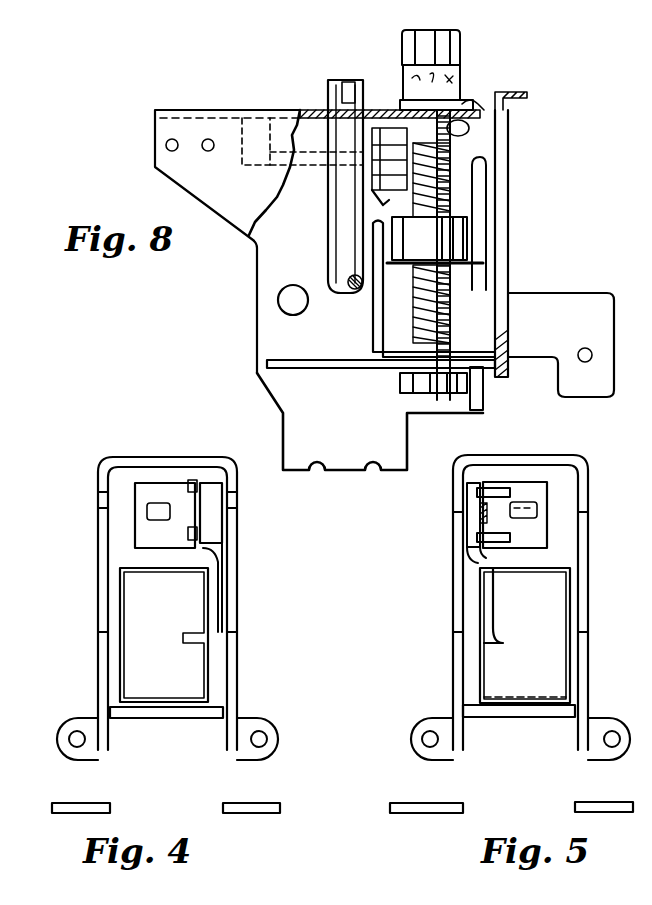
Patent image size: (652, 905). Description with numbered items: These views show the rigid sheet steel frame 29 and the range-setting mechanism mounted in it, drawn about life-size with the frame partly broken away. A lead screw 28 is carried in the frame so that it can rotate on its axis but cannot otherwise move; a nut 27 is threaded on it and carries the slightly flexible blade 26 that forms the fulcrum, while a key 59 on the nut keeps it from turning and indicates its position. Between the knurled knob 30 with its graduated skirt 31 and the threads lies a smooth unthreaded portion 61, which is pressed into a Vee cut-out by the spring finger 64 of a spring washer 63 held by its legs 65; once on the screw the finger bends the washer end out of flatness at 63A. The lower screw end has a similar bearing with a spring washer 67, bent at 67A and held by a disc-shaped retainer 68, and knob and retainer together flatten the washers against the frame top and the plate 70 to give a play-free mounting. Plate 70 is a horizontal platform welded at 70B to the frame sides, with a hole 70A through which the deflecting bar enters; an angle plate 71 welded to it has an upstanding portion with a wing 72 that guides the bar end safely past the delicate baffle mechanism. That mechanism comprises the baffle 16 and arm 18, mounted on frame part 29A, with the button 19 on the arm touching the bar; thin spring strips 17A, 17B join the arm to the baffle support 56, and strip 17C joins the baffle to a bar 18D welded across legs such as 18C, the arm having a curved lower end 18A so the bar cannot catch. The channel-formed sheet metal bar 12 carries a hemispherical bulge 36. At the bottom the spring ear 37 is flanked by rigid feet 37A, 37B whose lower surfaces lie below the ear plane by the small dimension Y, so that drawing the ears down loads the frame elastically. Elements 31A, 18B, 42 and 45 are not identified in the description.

In FIG. 8, the knurled knob 30 is at (410, 30).
In FIG. 8, the graduated skirt 31 is at (400, 78).
In FIG. 8, the washer 31A is at (448, 100).
In FIG. 8, the slot in terminal 18B is at (365, 82).
In FIG. 4, the slot in terminal 18B is at (190, 481).
In FIG. 8, the unthreaded cylindrical portion 61 is at (408, 101).
In FIG. 8, the spring washer 63 is at (470, 105).
In FIG. 8, the bent end of washer 63A is at (500, 95).
In FIG. 8, the legs 65 is at (505, 113).
In FIG. 8, the spring finger 64 is at (470, 130).
In FIG. 8, the mounting plate / ear 42 is at (330, 104).
In FIG. 4, the mounting plate / ear 42 is at (262, 719).
In FIG. 5, the mounting plate / ear 42 is at (440, 720).
In FIG. 8, the baffle 16 is at (245, 167).
In FIG. 5, the baffle 16 is at (478, 531).
In FIG. 8, the button 19 is at (345, 182).
In FIG. 5, the button 19 is at (540, 511).
In FIG. 8, the curved lower end 18A is at (385, 208).
In FIG. 8, the bar 18D is at (445, 155).
In FIG. 4, the bar 18D is at (212, 483).
In FIG. 8, the spring strip 17C is at (445, 182).
In FIG. 8, the bar 12 is at (510, 200).
In FIG. 8, the nut 27 is at (411, 245).
In FIG. 8, the flexible blade 26 is at (485, 265).
In FIG. 8, the key 59 is at (450, 302).
In FIG. 8, the lead screw 28 is at (450, 320).
In FIG. 8, the member 36 is at (510, 347).
In FIG. 8, the wing 72 is at (310, 303).
In FIG. 5, the wing 72 is at (497, 632).
In FIG. 8, the angle plate 71 is at (372, 348).
In FIG. 4, the angle plate 71 is at (148, 682).
In FIG. 5, the angle plate 71 is at (507, 680).
In FIG. 8, the plate 70 is at (268, 392).
In FIG. 4, the plate 70 is at (160, 720).
In FIG. 5, the plate 70 is at (480, 718).
In FIG. 8, the bent end of washer 67A is at (485, 387).
In FIG. 8, the retainer 68 is at (430, 405).
In FIG. 8, the spring washer 67 is at (468, 400).
In FIG. 8, the ear 37 is at (325, 473).
In FIG. 4, the ear 37 is at (255, 804).
In FIG. 5, the ear 37 is at (398, 805).
In FIG. 8, the foot 37A is at (283, 473).
In FIG. 5, the foot 37A is at (465, 813).
In FIG. 8, the foot 37B is at (380, 473).
In FIG. 4, the foot 37B is at (235, 815).
In FIG. 8, the frame 29 is at (648, 242).
In FIG. 4, the frame 29 is at (78, 498).
In FIG. 5, the frame 29 is at (442, 628).
In FIG. 4, the arm 18 is at (135, 483).
In FIG. 5, the arm 18 is at (550, 548).
In FIG. 4, the baffle support 56 is at (215, 525).
In FIG. 5, the baffle support 56 is at (475, 558).
In FIG. 4, the leg 18C is at (190, 537).
In FIG. 4, the frame 45 is at (97, 656).
In FIG. 4, the frame part 29A is at (240, 617).
In FIG. 4, the weld 70B is at (115, 720).
In FIG. 5, the spring strip 17A is at (490, 488).
In FIG. 5, the spring strip 17B is at (497, 543).
In FIG. 5, the hole 70A is at (505, 717).
In FIG. 5, the dimension Y is at (395, 809).